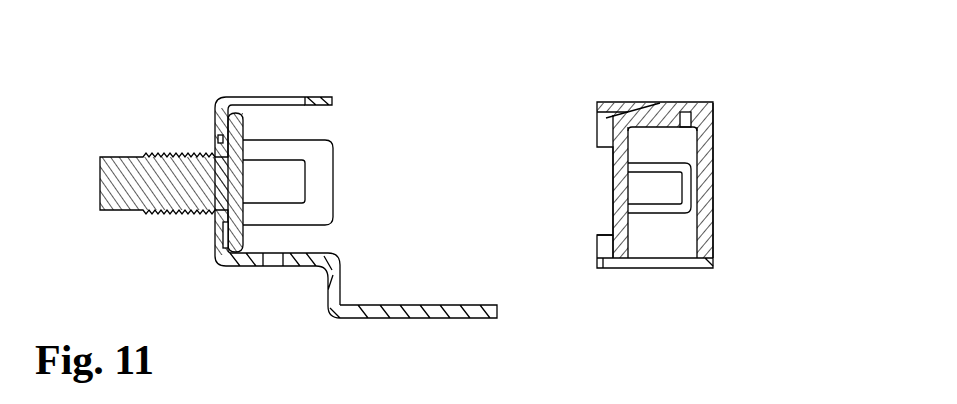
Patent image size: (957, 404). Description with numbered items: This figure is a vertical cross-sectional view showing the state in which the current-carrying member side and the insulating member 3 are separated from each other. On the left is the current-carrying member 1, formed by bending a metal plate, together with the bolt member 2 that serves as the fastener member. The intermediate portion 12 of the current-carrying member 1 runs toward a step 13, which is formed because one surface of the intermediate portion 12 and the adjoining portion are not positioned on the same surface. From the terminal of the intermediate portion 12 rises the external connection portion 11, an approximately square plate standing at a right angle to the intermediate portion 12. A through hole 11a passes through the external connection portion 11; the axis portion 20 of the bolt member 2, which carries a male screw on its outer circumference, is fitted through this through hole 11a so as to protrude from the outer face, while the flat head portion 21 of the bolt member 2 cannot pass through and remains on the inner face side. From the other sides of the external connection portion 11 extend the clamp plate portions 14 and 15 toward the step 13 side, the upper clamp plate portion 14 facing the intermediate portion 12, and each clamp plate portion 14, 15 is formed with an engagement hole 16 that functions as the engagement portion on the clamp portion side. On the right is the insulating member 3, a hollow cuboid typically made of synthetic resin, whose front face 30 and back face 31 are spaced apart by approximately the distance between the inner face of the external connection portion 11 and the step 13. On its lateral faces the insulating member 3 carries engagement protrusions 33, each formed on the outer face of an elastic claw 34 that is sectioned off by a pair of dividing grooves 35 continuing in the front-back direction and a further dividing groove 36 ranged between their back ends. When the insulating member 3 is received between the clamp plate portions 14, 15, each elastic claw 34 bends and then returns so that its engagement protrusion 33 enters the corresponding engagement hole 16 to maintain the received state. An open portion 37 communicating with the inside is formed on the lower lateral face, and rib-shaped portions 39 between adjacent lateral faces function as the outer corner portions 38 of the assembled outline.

The current-carrying member 1 is at (428, 320).
The bolt member 2 is at (130, 179).
The axis portion 20 is at (110, 170).
The insulating member 3 is at (713, 190).
The external connection portion 11 is at (222, 235).
The through hole 11a is at (213, 128).
The intermediate portion 12 is at (297, 267).
The step 13 is at (338, 288).
The clamp plate portion 14 is at (318, 97).
The clamp plate portion 15 is at (322, 180).
The engagement hole 16 is at (270, 97).
The head portion 21 is at (244, 236).
The front face 30 is at (620, 160).
The back face 31 is at (713, 232).
The engagement protrusion 33 is at (665, 101).
The elastic claw 34 is at (657, 192).
The dividing groove 35 is at (653, 164).
The dividing groove 36 is at (688, 114).
The open portion 37 is at (633, 248).
The outer corner portion 38 is at (674, 191).
The rib-shaped portion 39 is at (622, 100).